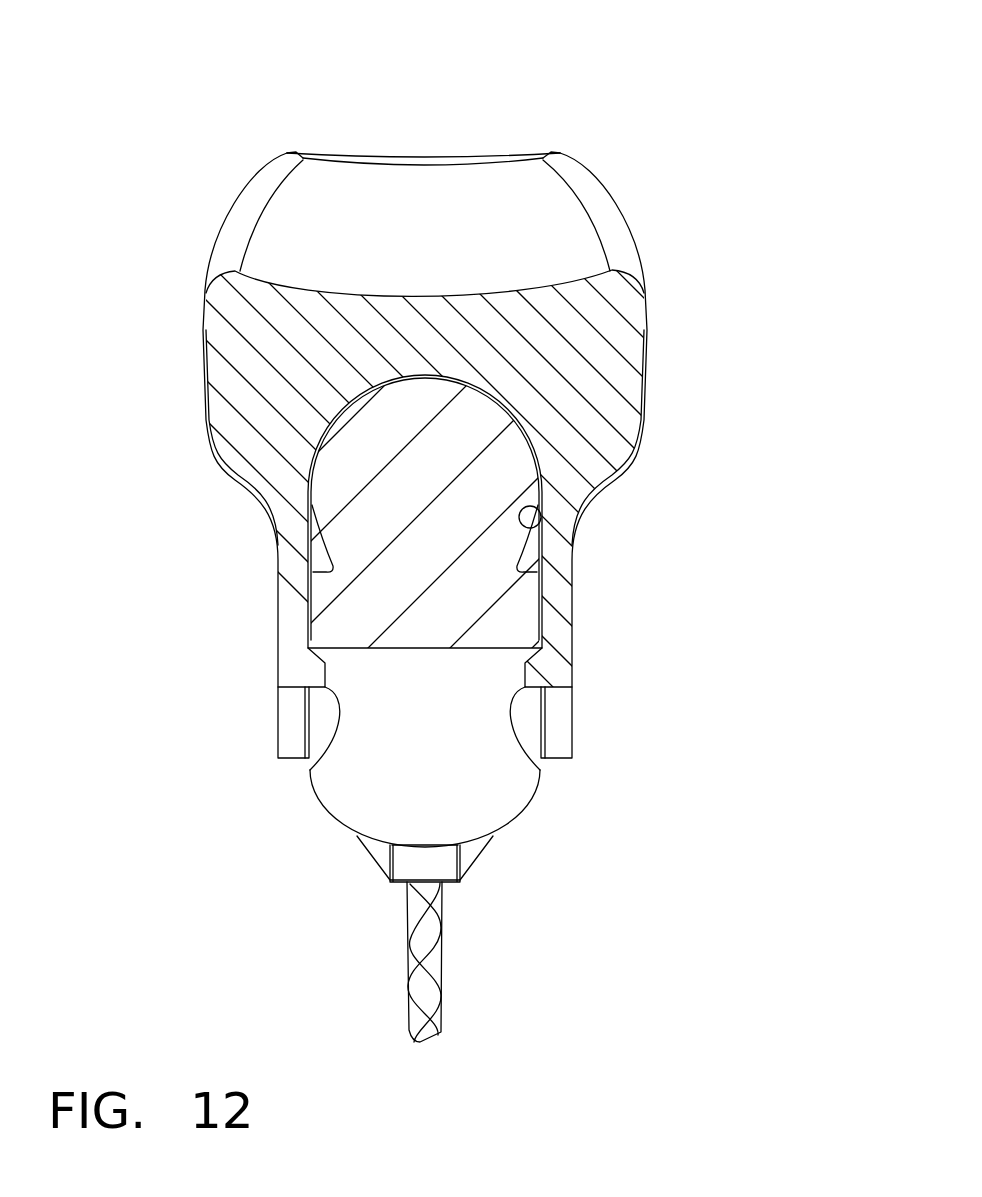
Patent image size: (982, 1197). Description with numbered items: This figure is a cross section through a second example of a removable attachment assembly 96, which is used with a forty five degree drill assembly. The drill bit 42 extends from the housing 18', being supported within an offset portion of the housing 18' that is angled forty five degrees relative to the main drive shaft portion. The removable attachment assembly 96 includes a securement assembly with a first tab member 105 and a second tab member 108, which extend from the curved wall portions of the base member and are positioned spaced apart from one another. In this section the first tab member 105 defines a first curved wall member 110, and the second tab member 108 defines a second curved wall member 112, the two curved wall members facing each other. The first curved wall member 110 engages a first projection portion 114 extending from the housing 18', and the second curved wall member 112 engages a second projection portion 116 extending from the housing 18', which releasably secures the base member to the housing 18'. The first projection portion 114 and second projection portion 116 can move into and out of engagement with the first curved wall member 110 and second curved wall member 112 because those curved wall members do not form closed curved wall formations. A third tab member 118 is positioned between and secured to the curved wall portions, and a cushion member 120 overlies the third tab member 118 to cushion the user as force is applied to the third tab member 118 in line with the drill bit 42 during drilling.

The removable attachment assembly 96 is at (516, 96).
The third tab member 118 is at (686, 316).
The cushion member 120 is at (236, 345).
The first projection portion 114 is at (522, 597).
The second projection portion 116 is at (296, 558).
The housing 18' is at (599, 526).
The second tab member 108 is at (292, 605).
The first tab member 105 is at (555, 633).
The second curved wall member 112 is at (303, 773).
The first curved wall member 110 is at (538, 777).
The drill bit 42 is at (417, 993).